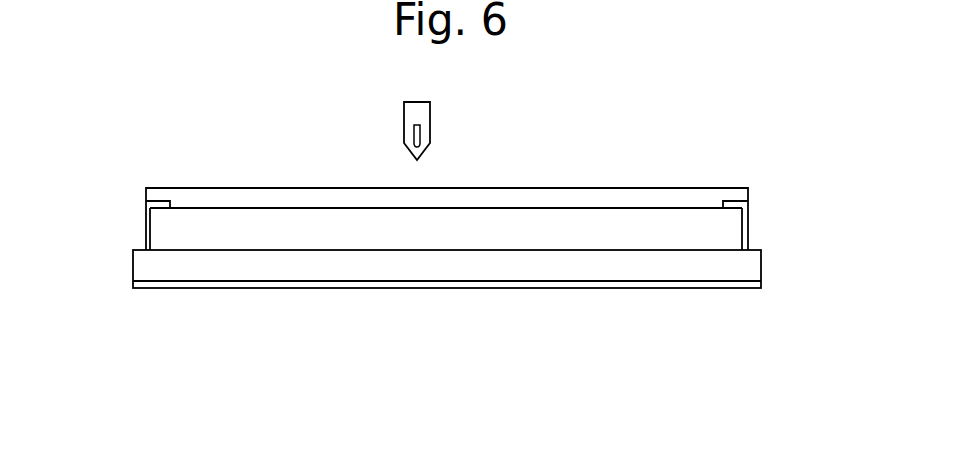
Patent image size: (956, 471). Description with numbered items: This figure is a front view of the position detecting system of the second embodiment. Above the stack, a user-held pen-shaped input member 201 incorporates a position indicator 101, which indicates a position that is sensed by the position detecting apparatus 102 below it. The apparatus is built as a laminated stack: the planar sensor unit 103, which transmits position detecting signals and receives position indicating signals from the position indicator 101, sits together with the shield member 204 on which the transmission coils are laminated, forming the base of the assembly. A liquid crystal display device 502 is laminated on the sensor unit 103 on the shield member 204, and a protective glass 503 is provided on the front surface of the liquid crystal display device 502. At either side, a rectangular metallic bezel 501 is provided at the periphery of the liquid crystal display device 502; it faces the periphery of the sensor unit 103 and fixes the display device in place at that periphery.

The position indicator 101 is at (414, 134).
The pen-shaped input member 201 is at (430, 108).
The position detecting apparatus 102 is at (172, 364).
The sensor unit 103 is at (582, 272).
The shield member 204 is at (272, 288).
The metallic bezel 501 is at (146, 221).
The liquid crystal display device 502 is at (560, 227).
The protective glass 503 is at (636, 202).